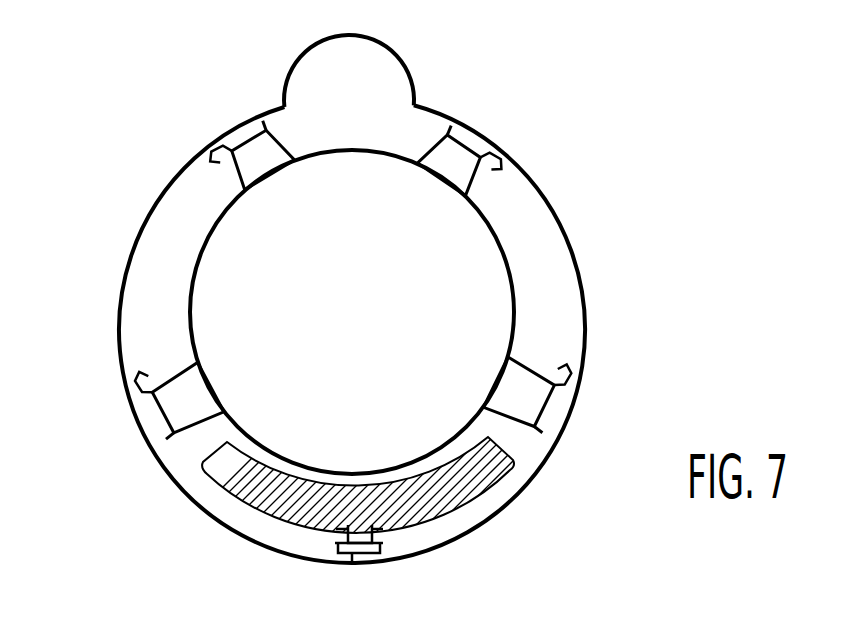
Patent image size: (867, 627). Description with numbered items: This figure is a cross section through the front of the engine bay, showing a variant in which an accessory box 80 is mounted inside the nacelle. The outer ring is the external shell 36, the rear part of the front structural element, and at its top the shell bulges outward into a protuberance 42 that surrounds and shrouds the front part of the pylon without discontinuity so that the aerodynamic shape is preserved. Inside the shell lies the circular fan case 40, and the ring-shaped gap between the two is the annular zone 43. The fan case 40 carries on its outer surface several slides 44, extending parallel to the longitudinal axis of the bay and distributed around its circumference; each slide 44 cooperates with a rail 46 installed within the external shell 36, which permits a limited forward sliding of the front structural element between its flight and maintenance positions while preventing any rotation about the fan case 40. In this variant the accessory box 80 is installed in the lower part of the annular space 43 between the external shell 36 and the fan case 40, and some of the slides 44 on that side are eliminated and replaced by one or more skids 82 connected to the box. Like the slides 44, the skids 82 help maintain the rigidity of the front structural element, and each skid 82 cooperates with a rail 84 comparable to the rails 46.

The external shell 36 is at (182, 163).
The fan case 40 is at (200, 255).
The protuberance 42 is at (293, 63).
The annular zone 43 is at (523, 217).
The slide 44 is at (193, 358).
The rail 46 is at (128, 368).
The accessory box 80 is at (228, 475).
The skid 82 is at (340, 545).
The rail 84 is at (383, 540).